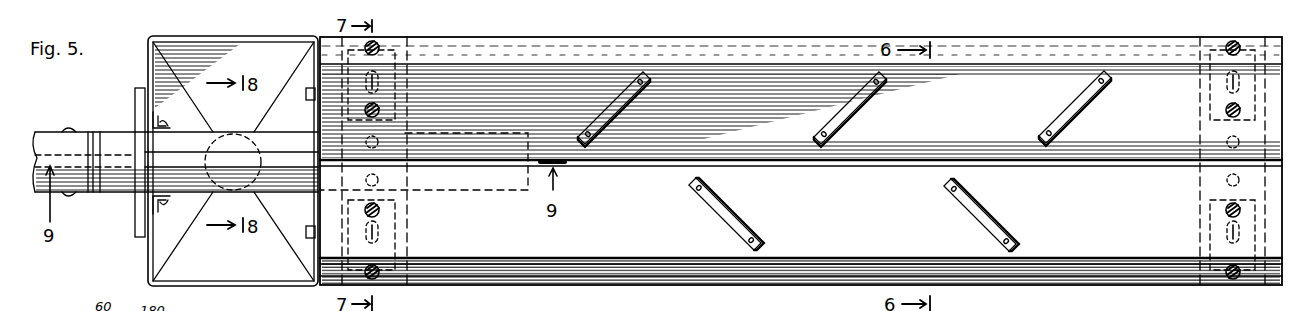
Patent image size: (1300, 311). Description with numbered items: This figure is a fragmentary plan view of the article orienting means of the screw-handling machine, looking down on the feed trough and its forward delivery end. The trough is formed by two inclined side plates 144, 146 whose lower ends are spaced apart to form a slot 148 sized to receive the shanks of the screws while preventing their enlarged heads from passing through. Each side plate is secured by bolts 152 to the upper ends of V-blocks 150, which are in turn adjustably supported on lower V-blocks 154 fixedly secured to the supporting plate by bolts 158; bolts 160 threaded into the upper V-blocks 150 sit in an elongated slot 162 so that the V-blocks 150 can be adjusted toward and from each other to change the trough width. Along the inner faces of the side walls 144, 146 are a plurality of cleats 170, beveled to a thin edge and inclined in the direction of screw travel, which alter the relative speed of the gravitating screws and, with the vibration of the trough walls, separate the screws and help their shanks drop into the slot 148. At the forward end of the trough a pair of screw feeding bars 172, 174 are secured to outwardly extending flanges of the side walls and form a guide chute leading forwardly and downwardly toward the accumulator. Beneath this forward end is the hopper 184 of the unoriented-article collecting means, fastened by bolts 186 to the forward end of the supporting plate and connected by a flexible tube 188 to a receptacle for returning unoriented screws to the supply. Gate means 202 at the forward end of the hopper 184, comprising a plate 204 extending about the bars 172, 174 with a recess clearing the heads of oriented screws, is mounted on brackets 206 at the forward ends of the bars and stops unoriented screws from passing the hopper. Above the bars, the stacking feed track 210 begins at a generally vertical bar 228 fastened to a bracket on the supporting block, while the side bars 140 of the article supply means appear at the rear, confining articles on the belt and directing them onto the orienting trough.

The side bars 140 is at (1012, 310).
The inclined side plate 144 is at (801, 103).
The inclined side plate 146 is at (652, 221).
The slot 148 is at (640, 156).
The V-blocks 150 is at (396, 120).
The bolts 152 is at (380, 50).
The V-blocks 154 is at (378, 176).
The bolts 158 is at (380, 142).
The bolts 160 is at (384, 88).
The elongated slot 162 is at (380, 76).
The cleats 170 is at (612, 104).
The screw feeding bar 172 is at (120, 140).
The screw feeding bar 174 is at (126, 186).
The hopper 184 is at (272, 283).
The bolts 186 is at (306, 92).
The flexible tube 188 is at (248, 136).
The gate means 202 is at (136, 104).
The plate 204 is at (136, 212).
The brackets 206 is at (160, 124).
The feed track 210 is at (46, 130).
The vertical bar 228 is at (64, 130).